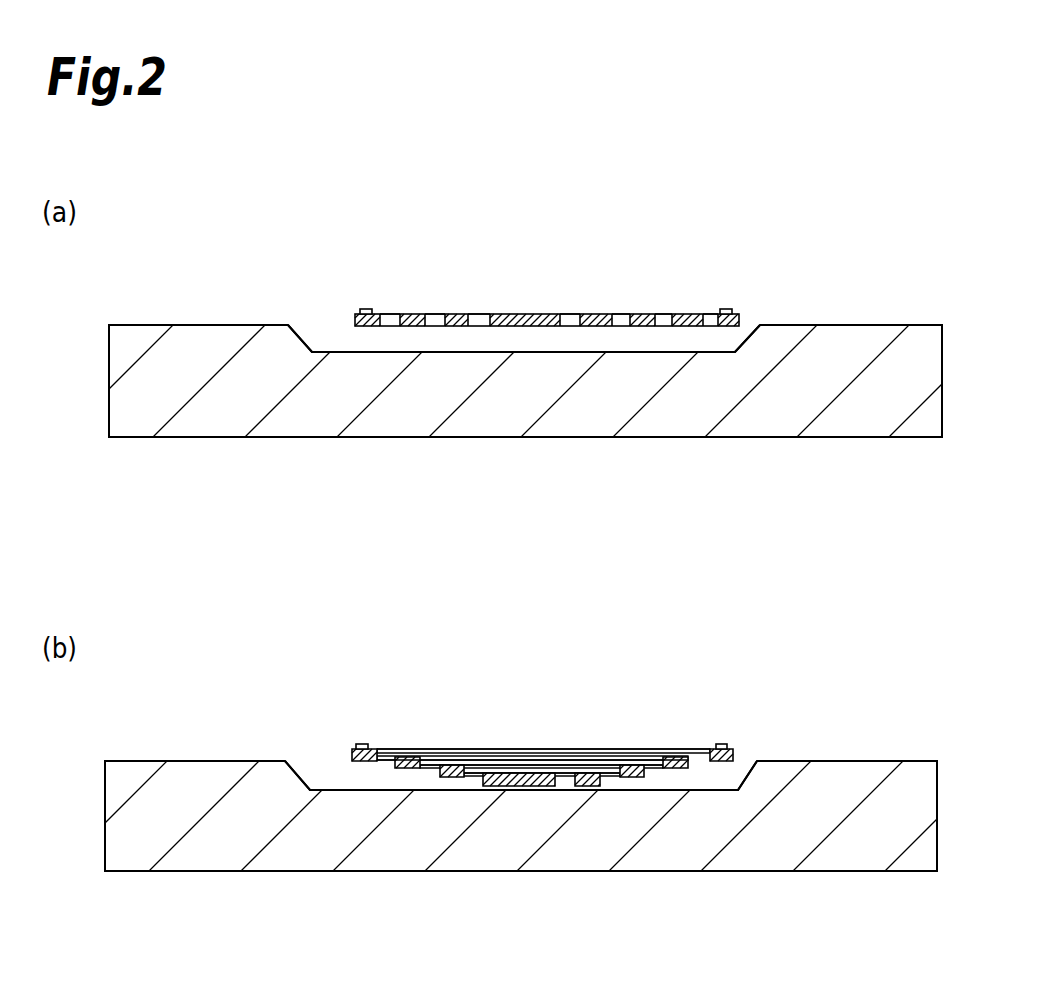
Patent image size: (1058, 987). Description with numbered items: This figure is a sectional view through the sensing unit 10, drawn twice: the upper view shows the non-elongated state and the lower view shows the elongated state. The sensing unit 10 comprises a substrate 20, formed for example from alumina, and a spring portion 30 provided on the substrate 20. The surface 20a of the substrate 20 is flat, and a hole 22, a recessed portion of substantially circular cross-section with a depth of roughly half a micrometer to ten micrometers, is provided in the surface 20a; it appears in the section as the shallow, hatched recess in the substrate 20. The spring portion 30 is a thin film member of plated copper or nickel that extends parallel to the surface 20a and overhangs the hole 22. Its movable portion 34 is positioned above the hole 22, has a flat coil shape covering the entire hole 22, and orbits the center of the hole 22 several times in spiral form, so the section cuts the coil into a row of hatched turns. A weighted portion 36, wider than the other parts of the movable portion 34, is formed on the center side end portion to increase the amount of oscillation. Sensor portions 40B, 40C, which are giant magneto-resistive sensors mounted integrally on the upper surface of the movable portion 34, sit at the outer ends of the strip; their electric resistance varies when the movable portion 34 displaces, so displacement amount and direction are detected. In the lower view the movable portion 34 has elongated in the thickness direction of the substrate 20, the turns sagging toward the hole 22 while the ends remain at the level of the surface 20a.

The sensing unit 10 is at (843, 226).
The substrate 20 is at (782, 439).
The surface of substrate 20a is at (205, 324).
The hole 22 is at (748, 330).
The spring portion 30 is at (545, 501).
The movable portion 34 is at (416, 314).
The weighted portion 36 is at (527, 314).
The sensor portion 40B is at (366, 308).
The sensor portion 40C is at (727, 308).